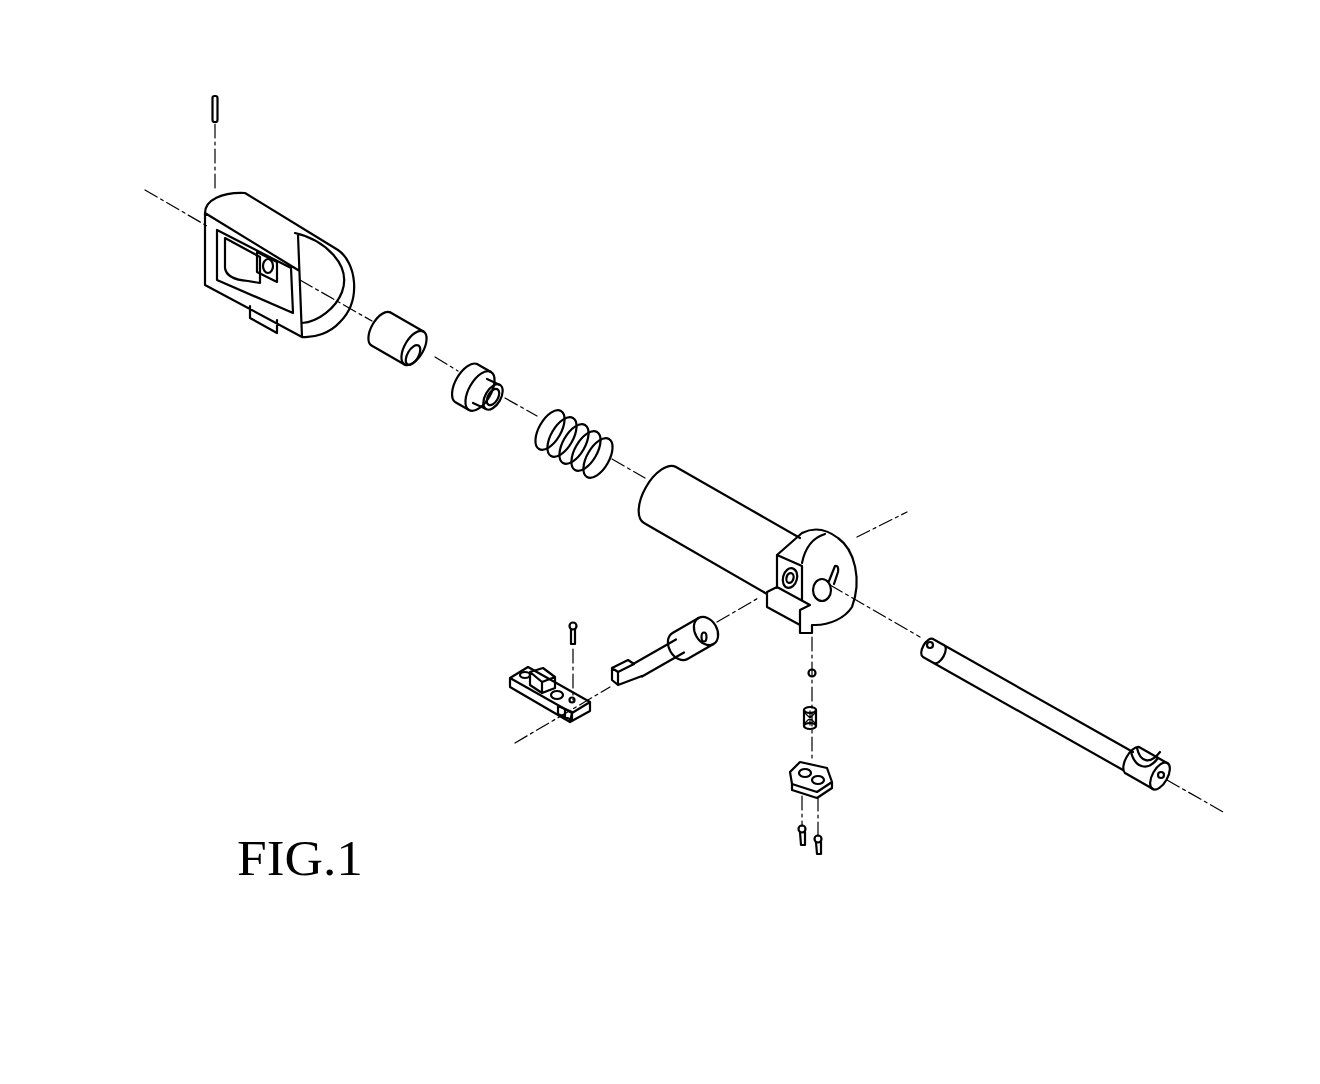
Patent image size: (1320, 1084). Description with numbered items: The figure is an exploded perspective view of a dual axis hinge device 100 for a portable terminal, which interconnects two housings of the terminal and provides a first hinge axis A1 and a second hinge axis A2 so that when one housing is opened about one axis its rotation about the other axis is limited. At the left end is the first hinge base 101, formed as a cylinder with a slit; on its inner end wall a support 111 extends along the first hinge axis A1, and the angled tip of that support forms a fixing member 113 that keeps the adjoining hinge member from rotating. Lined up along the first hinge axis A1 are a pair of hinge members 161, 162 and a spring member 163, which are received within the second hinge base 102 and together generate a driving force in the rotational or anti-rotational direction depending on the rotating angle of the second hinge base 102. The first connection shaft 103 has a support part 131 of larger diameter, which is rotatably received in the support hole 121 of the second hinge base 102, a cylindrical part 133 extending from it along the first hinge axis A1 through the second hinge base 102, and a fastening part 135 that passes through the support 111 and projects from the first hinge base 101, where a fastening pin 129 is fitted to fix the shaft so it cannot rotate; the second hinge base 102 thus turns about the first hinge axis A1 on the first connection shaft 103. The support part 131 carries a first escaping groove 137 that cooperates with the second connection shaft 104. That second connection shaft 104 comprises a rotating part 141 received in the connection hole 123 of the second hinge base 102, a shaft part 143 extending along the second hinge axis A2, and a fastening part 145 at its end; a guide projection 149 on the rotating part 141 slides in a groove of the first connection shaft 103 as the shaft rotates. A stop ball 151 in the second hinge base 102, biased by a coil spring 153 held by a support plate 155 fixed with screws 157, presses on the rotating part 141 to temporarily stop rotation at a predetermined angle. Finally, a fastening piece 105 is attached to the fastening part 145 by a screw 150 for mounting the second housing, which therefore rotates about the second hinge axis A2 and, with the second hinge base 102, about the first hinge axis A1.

The dual axis hinge device 100 is at (765, 161).
The first hinge base 101 is at (233, 259).
The support 111 is at (252, 266).
The fixing member 113 is at (272, 255).
The fastening pin 129 is at (220, 112).
The hinge member 161 is at (403, 327).
The hinge member 162 is at (470, 398).
The spring member 163 is at (577, 420).
The second hinge base 102 is at (796, 523).
The support hole 121 is at (820, 592).
The connection hole 123 is at (784, 552).
The second connection shaft 104 is at (664, 659).
The rotating part 141 is at (692, 621).
The shaft part 143 is at (660, 657).
The fastening part 145 is at (620, 670).
The guide projection 149 is at (704, 642).
The fastening piece 105 is at (510, 703).
The screw 150 is at (565, 627).
The stop ball 151 is at (820, 673).
The coil spring 153 is at (823, 717).
The support plate 155 is at (832, 770).
The screws 157 is at (796, 836).
The first connection shaft 103 is at (1067, 718).
The cylindrical part 133 is at (1030, 707).
The fastening part 135 is at (932, 642).
The support part 131 is at (1152, 772).
The first escaping groove 137 is at (1153, 760).
The first hinge axis A1 is at (1197, 797).
The second hinge axis A2 is at (543, 730).